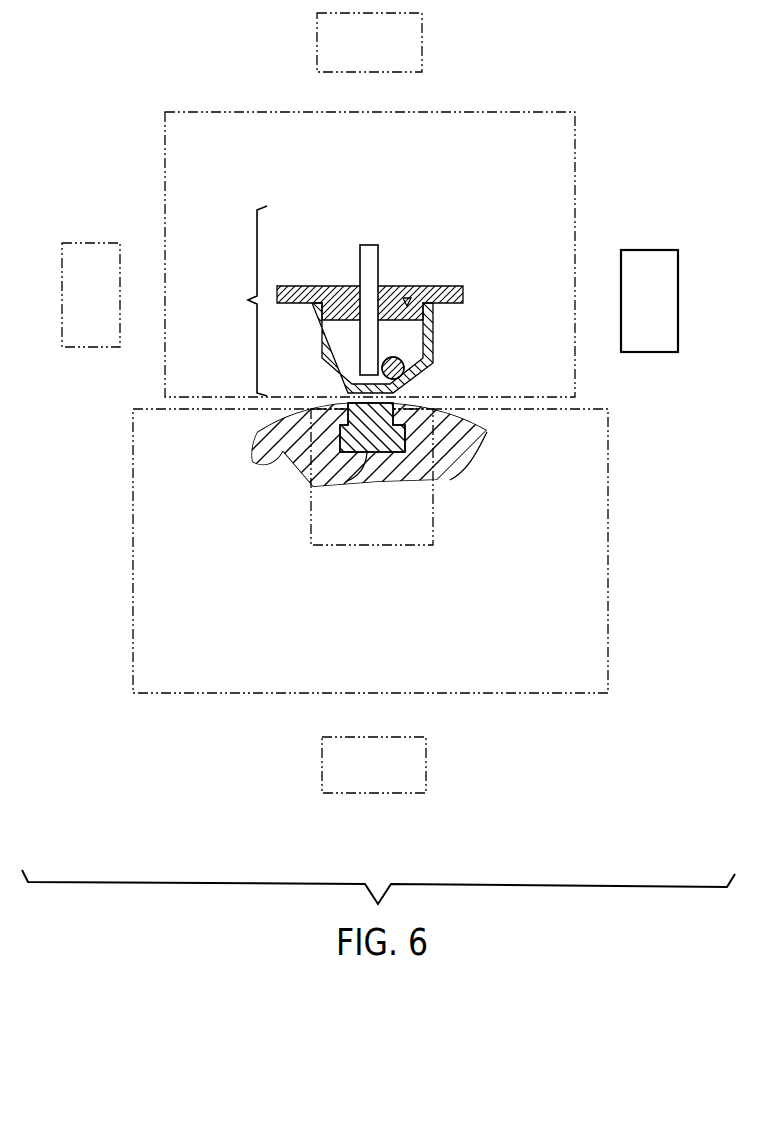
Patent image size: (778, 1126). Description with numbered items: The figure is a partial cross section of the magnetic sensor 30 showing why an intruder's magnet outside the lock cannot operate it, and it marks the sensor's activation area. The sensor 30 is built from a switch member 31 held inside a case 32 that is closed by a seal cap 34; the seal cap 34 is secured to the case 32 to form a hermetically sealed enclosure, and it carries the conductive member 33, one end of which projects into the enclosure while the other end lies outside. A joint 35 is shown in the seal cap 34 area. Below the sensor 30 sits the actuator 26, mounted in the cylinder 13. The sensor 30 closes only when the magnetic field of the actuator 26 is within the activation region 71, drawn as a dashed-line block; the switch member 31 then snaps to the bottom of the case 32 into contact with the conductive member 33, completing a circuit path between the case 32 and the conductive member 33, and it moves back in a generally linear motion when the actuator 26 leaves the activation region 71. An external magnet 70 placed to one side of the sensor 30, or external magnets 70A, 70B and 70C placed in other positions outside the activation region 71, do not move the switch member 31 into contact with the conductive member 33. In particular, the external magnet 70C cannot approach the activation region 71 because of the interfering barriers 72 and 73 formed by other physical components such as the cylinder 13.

The cylinder 13 is at (295, 447).
The actuator 26 is at (345, 482).
The magnetic sensor 30 is at (242, 301).
The switch member 31 is at (406, 362).
The case 32 is at (421, 385).
The conductive member 33 is at (378, 342).
The seal cap 34 is at (455, 288).
The joint 35 is at (407, 298).
The external magnet 70 is at (649, 250).
The external magnet 70A is at (317, 40).
The external magnet 70B is at (90, 243).
The external magnet 70C is at (426, 766).
The activation region 71 is at (435, 505).
The interfering barrier 72 is at (472, 112).
The interfering barrier 73 is at (255, 697).